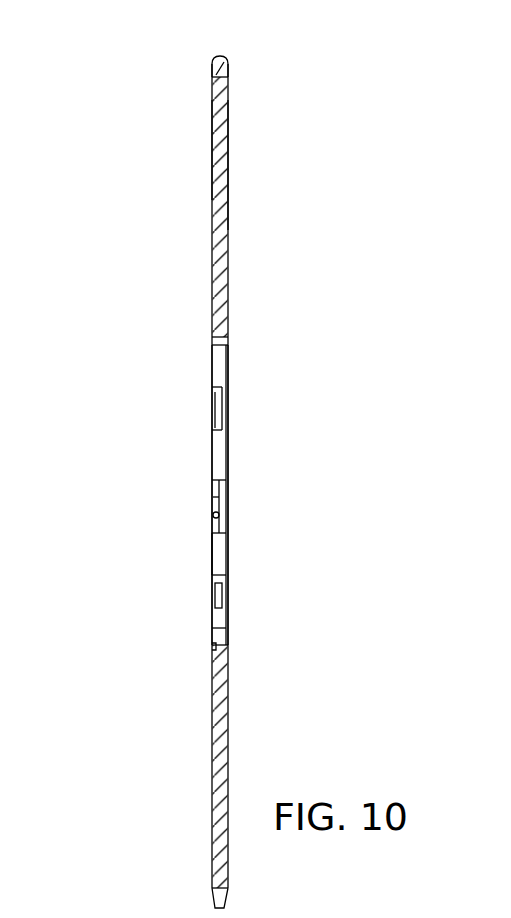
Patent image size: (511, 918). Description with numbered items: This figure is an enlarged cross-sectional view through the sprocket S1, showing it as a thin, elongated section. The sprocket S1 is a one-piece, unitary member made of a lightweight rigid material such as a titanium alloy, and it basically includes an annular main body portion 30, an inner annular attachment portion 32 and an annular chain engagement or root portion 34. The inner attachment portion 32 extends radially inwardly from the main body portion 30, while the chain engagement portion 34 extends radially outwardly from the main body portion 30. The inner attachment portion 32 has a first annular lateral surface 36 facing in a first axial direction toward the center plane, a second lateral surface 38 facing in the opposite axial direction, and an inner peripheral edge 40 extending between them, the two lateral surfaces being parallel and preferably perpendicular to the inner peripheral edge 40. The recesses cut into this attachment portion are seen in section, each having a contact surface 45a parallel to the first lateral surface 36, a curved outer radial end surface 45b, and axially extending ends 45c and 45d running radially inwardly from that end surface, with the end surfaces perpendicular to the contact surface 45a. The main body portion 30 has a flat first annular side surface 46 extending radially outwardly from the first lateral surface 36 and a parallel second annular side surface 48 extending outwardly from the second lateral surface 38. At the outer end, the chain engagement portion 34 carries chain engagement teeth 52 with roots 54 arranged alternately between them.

The annular main body portion 30 is at (230, 239).
The inner annular attachment portion 32 is at (230, 332).
The annular chain engagement portion 34 is at (231, 71).
The first annular lateral surface 36 is at (212, 456).
The second lateral surface 38 is at (228, 447).
The inner peripheral edge 40 is at (219, 468).
The contact surface 45a is at (218, 523).
The curved outer radial end surface 45b is at (218, 501).
The axially extending end 45c is at (213, 527).
The axially extending end 45d is at (213, 492).
The first annular side surface 46 is at (212, 140).
The second annular side surface 48 is at (229, 166).
The chain engagement teeth 52 is at (226, 58).
The roots 54 is at (212, 62).
The sprocket S1 is at (277, 184).